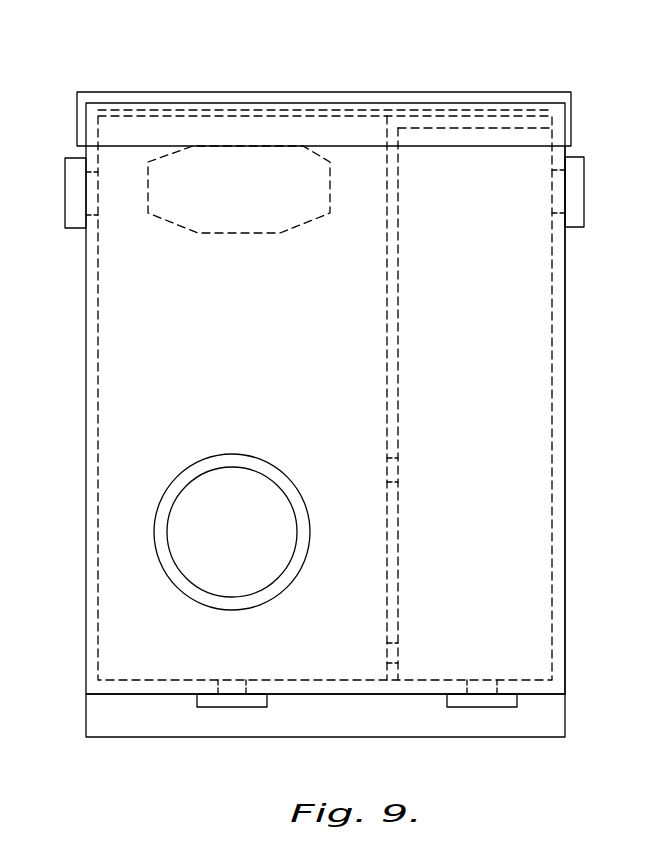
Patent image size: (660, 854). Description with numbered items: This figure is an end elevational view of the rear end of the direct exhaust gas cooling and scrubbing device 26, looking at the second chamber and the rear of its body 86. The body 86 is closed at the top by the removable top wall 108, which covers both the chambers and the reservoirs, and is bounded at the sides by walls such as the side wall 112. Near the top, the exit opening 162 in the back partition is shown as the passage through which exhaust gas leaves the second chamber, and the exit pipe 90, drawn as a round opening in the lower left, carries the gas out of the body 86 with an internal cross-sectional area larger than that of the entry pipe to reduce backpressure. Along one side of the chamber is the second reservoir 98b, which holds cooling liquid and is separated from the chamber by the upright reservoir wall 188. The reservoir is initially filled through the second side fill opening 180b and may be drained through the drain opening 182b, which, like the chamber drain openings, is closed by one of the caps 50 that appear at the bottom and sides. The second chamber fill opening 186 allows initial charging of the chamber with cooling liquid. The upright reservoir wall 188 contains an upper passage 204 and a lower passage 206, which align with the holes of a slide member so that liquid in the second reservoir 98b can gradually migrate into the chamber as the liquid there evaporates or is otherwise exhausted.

The direct exhaust gas cooling and scrubbing device 26 is at (593, 148).
The caps 50 is at (65, 215).
The body 86 is at (565, 499).
The exit pipe 90 is at (255, 457).
The second reservoir 98b is at (516, 413).
The removable top wall 108 is at (432, 92).
The side wall 112 is at (565, 325).
The exit opening 162 is at (298, 148).
The second side fill opening 180b is at (558, 196).
The drain opening 182b is at (473, 686).
The second chamber fill opening 186 is at (92, 200).
The upright reservoir wall 188 is at (387, 292).
The upper passage 204 is at (399, 472).
The lower passage 206 is at (396, 650).